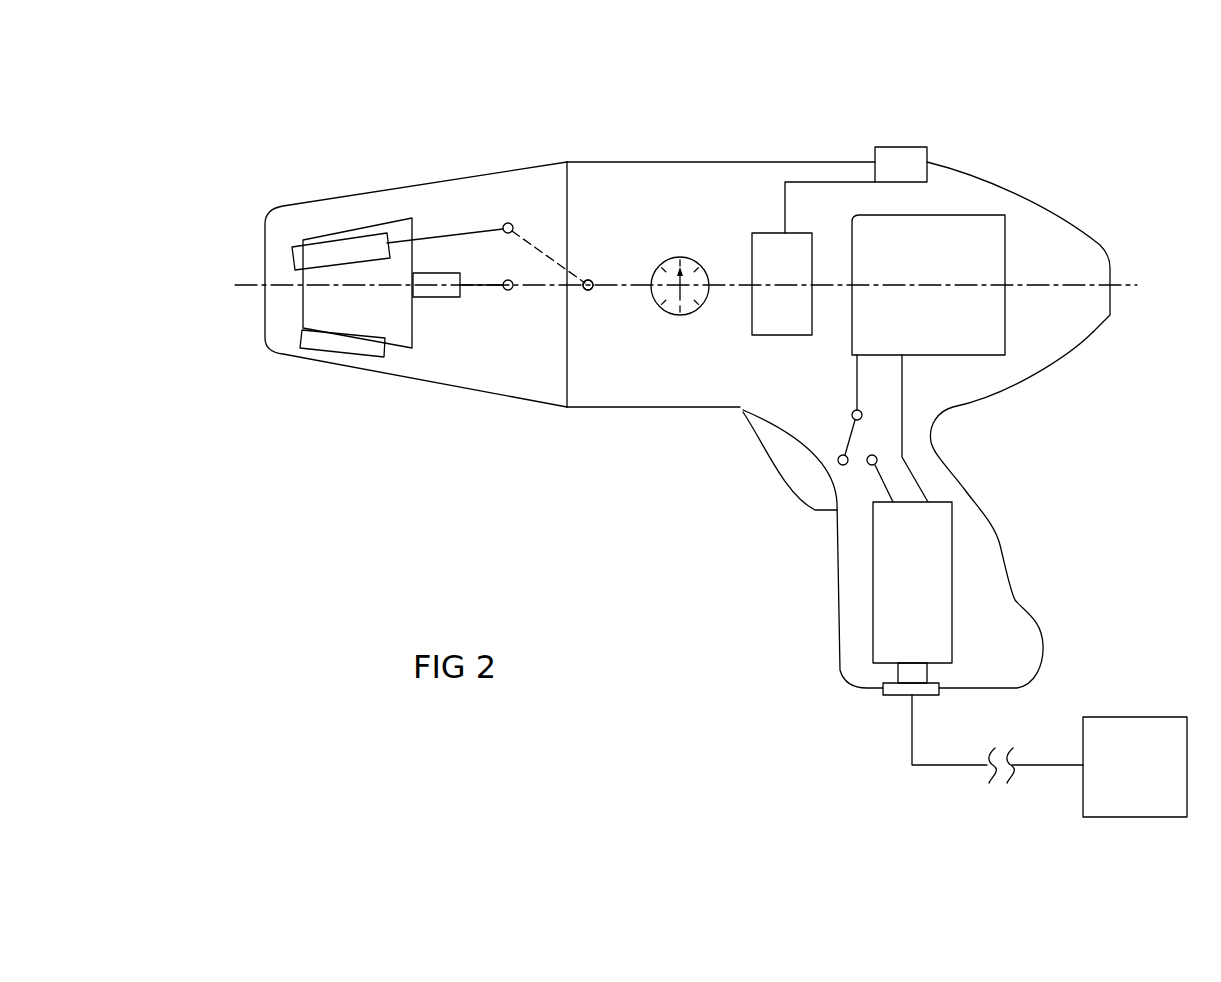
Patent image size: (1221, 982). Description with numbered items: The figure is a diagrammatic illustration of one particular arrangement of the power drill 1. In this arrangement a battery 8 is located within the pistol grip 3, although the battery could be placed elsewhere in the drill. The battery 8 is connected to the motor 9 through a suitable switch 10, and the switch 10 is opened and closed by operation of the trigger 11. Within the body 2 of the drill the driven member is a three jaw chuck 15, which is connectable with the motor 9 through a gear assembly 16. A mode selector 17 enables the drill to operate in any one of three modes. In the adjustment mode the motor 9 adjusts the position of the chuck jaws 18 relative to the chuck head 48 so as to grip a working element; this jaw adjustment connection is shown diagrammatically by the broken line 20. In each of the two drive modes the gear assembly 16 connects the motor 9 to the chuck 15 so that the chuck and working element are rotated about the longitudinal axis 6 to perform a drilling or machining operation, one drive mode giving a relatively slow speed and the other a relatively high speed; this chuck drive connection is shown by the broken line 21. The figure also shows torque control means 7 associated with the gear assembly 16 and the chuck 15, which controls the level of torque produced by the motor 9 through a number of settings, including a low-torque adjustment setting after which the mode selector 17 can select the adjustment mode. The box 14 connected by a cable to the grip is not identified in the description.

The drill 1 is at (726, 92).
The body 2 is at (660, 160).
The pistol grip 3 is at (1000, 545).
The longitudinal axis 6 is at (255, 285).
The torque control means 7 is at (658, 320).
The battery 8 is at (900, 578).
The motor 9 is at (965, 237).
The switch 10 is at (847, 440).
The trigger 11 is at (800, 484).
The external unit 14 is at (1133, 737).
The three jaw chuck 15 is at (357, 284).
The gear assembly 16 is at (776, 306).
The mode selector 17 is at (897, 160).
The chuck jaws 18 is at (335, 252).
The broken line 20 is at (543, 250).
The broken line 21 is at (547, 290).
The chuck head 48 is at (400, 323).